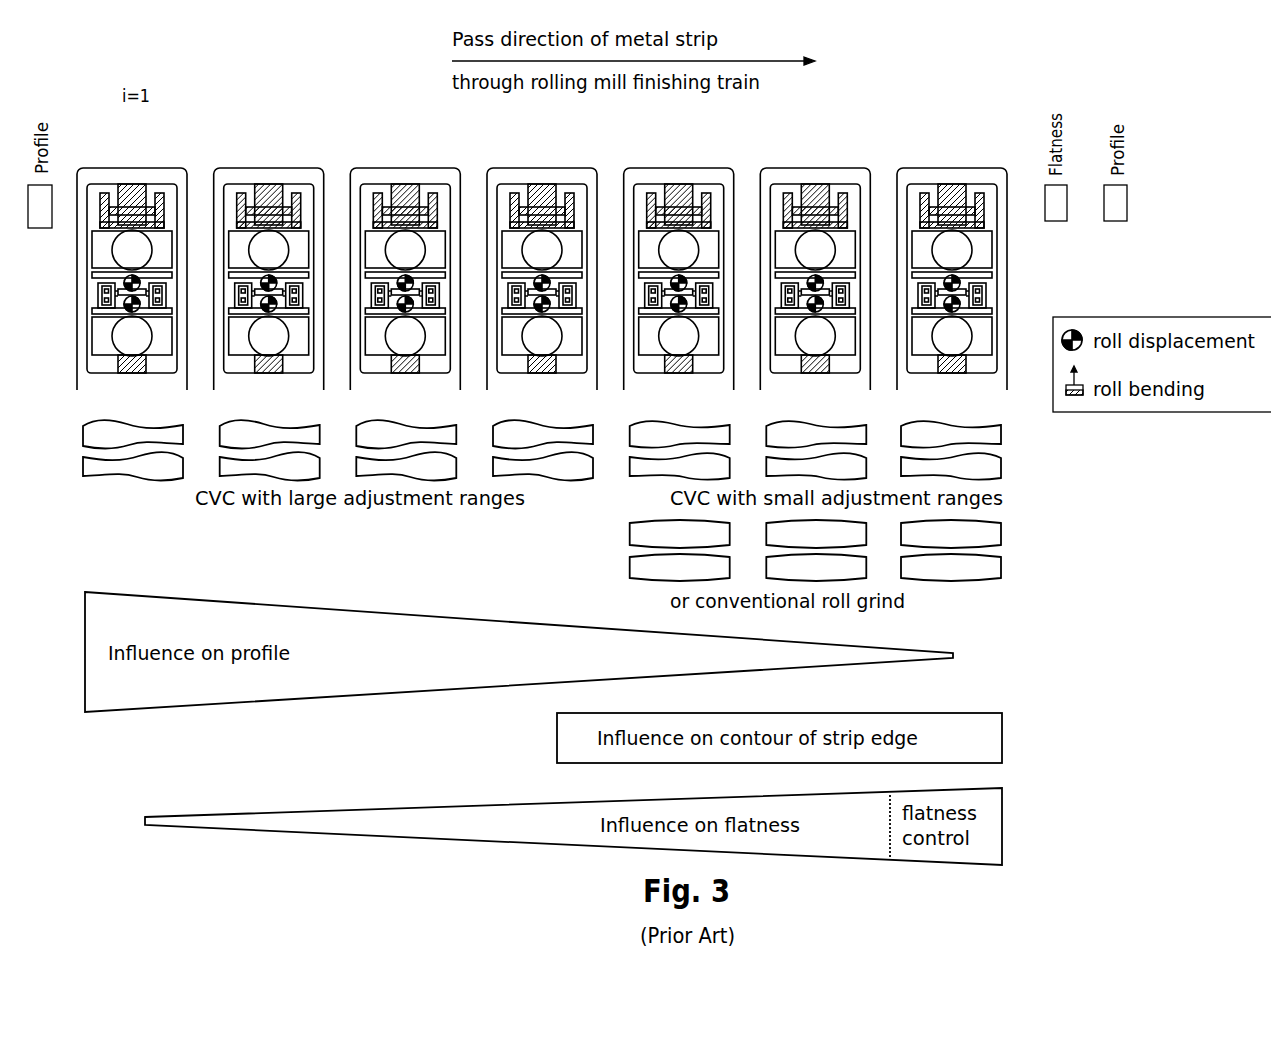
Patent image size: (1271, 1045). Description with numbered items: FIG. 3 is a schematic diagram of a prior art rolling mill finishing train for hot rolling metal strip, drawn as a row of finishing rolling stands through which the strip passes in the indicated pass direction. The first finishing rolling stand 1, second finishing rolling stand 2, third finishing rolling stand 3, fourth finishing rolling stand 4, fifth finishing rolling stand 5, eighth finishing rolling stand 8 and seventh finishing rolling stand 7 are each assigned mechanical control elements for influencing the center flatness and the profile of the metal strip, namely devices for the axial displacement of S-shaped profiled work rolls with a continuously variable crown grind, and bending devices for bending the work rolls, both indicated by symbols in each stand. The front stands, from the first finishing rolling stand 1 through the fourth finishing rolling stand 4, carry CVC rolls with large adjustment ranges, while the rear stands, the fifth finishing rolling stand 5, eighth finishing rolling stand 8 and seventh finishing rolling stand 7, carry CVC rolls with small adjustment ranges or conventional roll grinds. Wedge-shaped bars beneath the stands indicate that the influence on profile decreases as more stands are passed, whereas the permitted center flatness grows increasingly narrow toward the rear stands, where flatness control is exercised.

The finishing rolling stand F1 1 is at (132, 266).
The finishing rolling stand F2 2 is at (269, 266).
The finishing rolling stand F3 3 is at (405, 266).
The finishing rolling stand F4 4 is at (542, 266).
The finishing rolling stand F5 5 is at (679, 266).
The finishing rolling stand F7 7 is at (952, 266).
The finishing rolling stand F8 8 is at (815, 266).